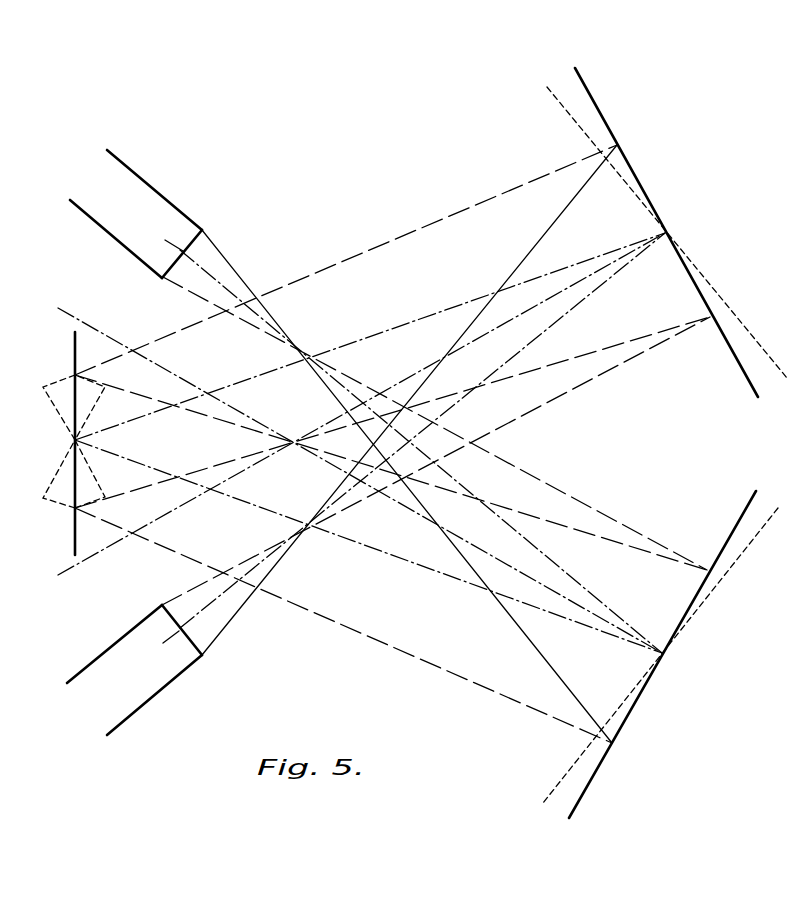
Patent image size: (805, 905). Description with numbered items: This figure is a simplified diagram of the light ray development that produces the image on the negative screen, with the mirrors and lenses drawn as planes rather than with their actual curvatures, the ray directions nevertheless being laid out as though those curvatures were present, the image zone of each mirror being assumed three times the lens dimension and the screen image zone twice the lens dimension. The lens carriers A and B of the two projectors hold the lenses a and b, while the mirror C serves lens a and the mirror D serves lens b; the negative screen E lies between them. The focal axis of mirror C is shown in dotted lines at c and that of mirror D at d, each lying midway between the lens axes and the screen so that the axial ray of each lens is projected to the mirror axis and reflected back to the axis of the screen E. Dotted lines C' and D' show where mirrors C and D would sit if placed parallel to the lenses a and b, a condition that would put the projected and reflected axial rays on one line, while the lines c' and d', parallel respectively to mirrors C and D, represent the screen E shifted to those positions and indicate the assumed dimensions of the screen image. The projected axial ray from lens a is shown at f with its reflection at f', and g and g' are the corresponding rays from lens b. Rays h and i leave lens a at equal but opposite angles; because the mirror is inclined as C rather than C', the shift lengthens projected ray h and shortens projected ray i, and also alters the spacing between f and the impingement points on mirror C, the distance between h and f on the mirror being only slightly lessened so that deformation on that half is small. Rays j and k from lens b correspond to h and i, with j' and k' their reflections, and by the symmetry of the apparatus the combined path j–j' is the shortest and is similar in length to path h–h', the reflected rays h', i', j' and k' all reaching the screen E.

The lens carrier A is at (136, 214).
The lens carrier B is at (134, 670).
The mirror C is at (662, 654).
The mirror position line C' is at (660, 655).
The mirror D is at (666, 232).
The mirror position line D' is at (667, 232).
The negative screen E is at (72, 360).
The lens a is at (182, 249).
The lens b is at (183, 645).
The focal axis of mirror C c is at (360, 480).
The shifted screen line c' is at (60, 474).
The focal axis of mirror D d is at (361, 407).
The shifted screen line d' is at (62, 407).
The projected axial ray f is at (421, 451).
The reflected axial ray f' is at (368, 546).
The projected axial ray g is at (422, 430).
The reflected axial ray g' is at (370, 336).
The projected ray h is at (407, 486).
The reflected ray h' is at (343, 625).
The projected ray i is at (435, 423).
The reflected ray i' is at (391, 472).
The projected ray j is at (409, 400).
The reflected ray j' is at (346, 260).
The projected ray k is at (436, 461).
The reflected ray k' is at (392, 412).